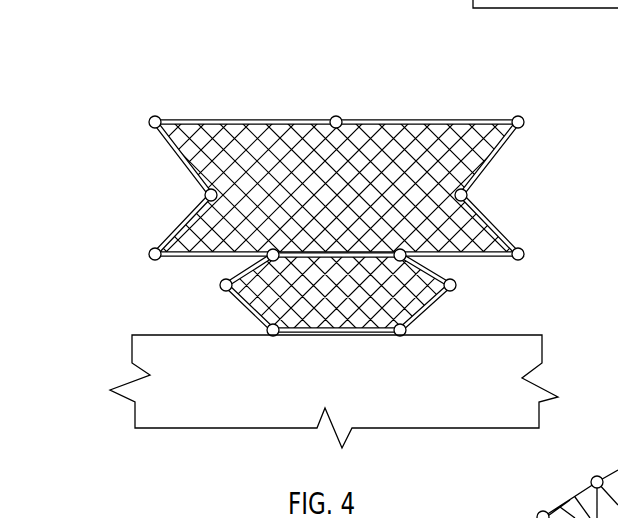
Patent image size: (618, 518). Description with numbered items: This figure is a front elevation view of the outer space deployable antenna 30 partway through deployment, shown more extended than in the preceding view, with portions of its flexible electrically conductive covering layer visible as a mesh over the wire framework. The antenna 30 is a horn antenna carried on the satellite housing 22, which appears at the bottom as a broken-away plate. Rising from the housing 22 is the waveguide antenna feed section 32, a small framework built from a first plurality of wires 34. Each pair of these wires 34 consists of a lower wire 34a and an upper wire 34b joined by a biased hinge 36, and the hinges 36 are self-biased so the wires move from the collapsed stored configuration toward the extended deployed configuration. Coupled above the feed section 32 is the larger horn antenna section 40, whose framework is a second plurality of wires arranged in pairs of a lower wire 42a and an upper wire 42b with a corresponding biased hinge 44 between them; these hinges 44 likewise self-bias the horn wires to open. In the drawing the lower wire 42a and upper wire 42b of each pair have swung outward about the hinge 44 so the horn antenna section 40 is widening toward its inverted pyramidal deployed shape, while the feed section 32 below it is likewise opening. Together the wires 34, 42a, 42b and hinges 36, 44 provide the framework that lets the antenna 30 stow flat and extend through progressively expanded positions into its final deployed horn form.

The satellite housing 22 is at (513, 367).
The outer space deployable antenna 30 is at (309, 231).
The waveguide antenna feed section 32 is at (309, 283).
The first plurality of wires 34 is at (309, 227).
The lower wire 34a is at (248, 308).
The upper wire 34b is at (250, 268).
The biased hinge 36 is at (458, 284).
The horn antenna section 40 is at (309, 175).
The lower wire 42a is at (188, 216).
The upper wire 42b is at (178, 155).
The biased hinge 44 is at (205, 194).